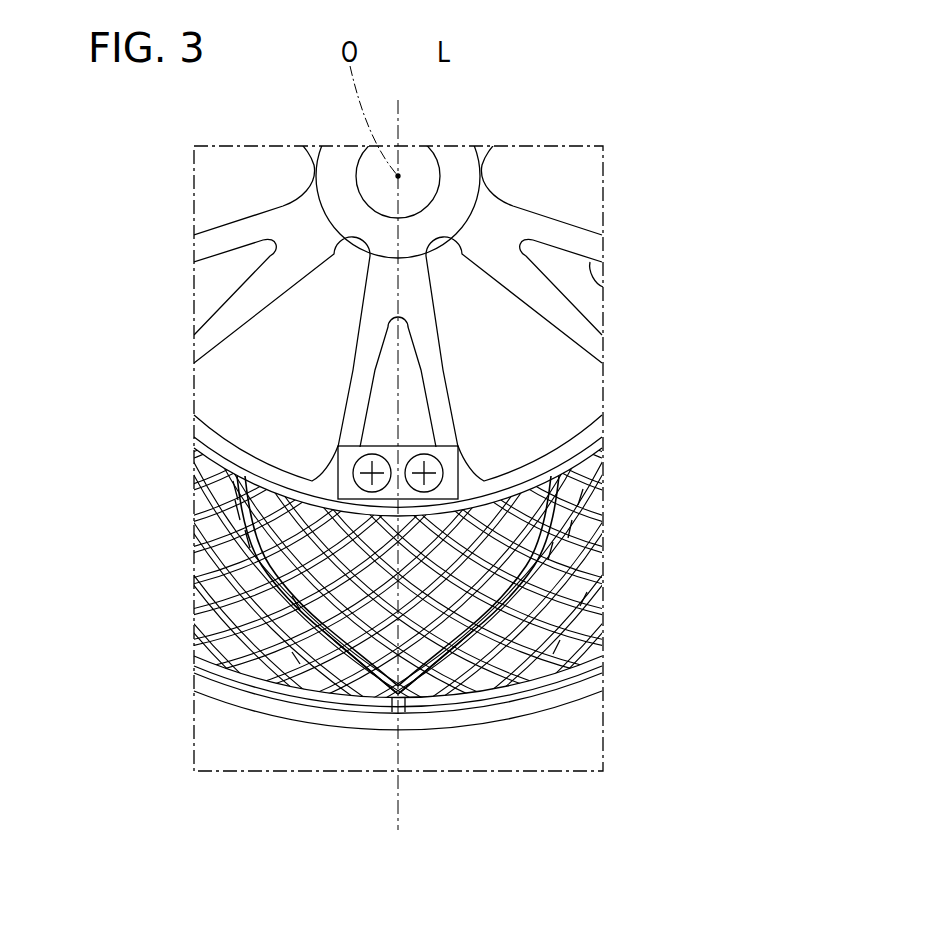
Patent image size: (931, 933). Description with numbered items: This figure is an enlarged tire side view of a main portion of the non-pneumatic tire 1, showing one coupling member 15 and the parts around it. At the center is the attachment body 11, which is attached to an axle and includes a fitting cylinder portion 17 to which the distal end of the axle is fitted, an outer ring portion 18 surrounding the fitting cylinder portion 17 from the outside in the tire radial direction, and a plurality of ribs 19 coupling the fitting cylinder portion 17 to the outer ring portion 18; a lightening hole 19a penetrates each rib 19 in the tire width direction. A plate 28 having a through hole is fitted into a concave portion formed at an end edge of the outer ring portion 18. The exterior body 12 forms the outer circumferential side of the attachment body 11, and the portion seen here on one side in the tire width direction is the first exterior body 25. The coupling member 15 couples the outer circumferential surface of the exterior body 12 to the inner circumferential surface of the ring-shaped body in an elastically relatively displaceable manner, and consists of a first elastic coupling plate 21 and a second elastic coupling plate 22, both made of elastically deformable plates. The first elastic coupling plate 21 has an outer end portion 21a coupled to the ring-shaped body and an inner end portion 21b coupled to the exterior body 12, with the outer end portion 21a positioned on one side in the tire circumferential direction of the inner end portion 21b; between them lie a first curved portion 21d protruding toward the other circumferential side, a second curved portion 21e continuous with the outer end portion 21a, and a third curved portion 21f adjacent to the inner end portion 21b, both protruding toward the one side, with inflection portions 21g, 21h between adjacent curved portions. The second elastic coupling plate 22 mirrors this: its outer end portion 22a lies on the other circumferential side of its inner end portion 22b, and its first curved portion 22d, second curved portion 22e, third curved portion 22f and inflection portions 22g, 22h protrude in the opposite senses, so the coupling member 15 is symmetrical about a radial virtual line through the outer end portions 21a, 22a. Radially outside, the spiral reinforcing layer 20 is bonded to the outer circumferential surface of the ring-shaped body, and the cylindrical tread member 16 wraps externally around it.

The non-pneumatic tire 1 is at (712, 100).
The attachment body 11 is at (444, 269).
The exterior body 12 is at (472, 468).
The coupling member 15 is at (465, 454).
The tread member 16 is at (537, 707).
The fitting cylinder portion 17 is at (474, 181).
The outer ring portion 18 is at (548, 448).
The rib 19 is at (548, 222).
The lightening hole 19a is at (603, 287).
The spiral reinforcing layer 20 is at (258, 693).
The first elastic coupling plate 21 is at (465, 433).
The outer end portion 21a is at (392, 712).
The inner end portion 21b is at (233, 481).
The first curved portion 21d is at (292, 596).
The second curved portion 21e is at (322, 652).
The third curved portion 21f is at (235, 500).
The inflection portion 21g is at (292, 652).
The inflection portion 21h is at (245, 530).
The second elastic coupling plate 22 is at (465, 433).
The outer end portion 22a is at (404, 712).
The inner end portion 22b is at (583, 489).
The first curved portion 22d is at (587, 592).
The second curved portion 22e is at (474, 652).
The third curved portion 22f is at (572, 520).
The inflection portion 22g is at (560, 640).
The inflection portion 22h is at (553, 542).
The first exterior body 25 is at (590, 458).
The plate 28 is at (352, 450).